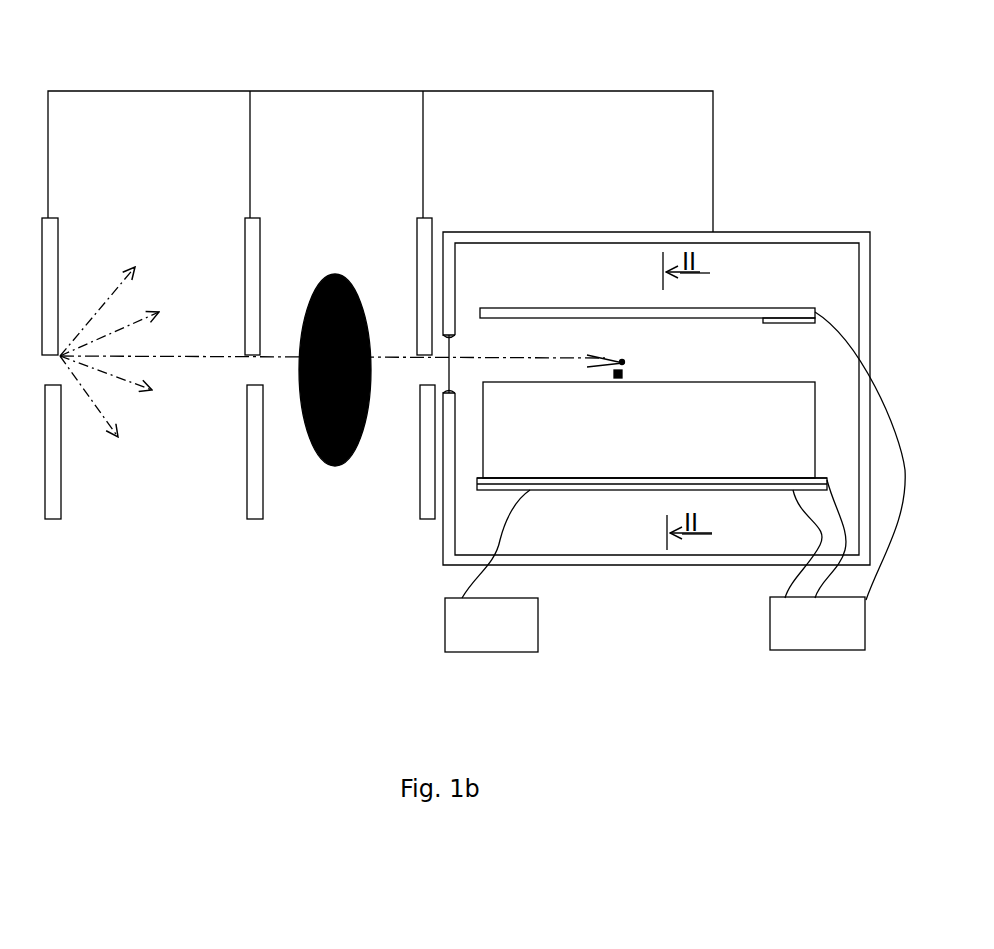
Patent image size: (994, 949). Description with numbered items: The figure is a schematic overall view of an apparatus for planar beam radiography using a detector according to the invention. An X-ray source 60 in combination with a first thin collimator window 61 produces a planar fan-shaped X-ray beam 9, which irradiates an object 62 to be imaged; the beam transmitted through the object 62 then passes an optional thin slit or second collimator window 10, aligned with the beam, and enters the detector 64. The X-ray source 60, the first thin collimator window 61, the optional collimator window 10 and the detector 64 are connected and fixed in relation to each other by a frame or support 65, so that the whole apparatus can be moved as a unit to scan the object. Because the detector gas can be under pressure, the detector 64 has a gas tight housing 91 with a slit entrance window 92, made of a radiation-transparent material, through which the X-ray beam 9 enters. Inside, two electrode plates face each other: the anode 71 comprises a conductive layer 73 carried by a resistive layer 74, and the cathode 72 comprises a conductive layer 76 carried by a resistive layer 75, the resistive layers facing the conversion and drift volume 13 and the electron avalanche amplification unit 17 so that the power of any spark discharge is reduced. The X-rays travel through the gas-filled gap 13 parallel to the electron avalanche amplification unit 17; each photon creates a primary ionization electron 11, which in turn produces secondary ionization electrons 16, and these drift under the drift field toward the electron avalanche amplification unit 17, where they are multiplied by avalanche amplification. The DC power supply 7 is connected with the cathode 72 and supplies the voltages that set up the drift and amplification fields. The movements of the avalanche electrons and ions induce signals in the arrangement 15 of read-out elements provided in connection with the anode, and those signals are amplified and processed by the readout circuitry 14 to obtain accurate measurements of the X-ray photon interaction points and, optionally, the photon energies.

The frame or support 65 is at (125, 91).
The X-ray source 60 is at (62, 370).
The planar X-ray beam 9 is at (168, 356).
The first thin collimator window 61 is at (261, 356).
The second collimator window 10 is at (420, 356).
The object 62 is at (352, 455).
The gas tight housing 91 is at (733, 235).
The slit entrance window 92 is at (452, 335).
The cathode 72 is at (713, 306).
The resistive layer 75 is at (766, 323).
The conductive layer 76 is at (815, 310).
The conversion and drift volume 13 is at (731, 352).
The primary ionization electron 11 is at (626, 360).
The secondary ionization electrons 16 is at (628, 374).
The electron avalanche amplification unit 17 is at (790, 388).
The anode 71 is at (552, 496).
The conductive layer 73 is at (598, 488).
The resistive layer 74 is at (648, 480).
The arrangement of read-out elements 15 is at (703, 480).
The readout circuitry 14 is at (491, 571).
The DC power supply 7 is at (817, 623).
The detector 64 is at (678, 600).